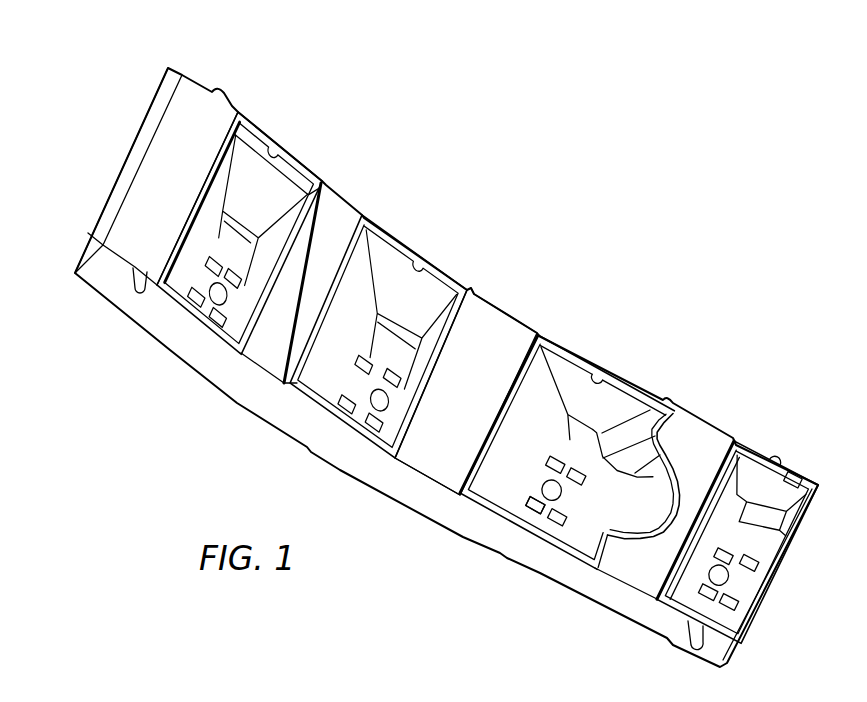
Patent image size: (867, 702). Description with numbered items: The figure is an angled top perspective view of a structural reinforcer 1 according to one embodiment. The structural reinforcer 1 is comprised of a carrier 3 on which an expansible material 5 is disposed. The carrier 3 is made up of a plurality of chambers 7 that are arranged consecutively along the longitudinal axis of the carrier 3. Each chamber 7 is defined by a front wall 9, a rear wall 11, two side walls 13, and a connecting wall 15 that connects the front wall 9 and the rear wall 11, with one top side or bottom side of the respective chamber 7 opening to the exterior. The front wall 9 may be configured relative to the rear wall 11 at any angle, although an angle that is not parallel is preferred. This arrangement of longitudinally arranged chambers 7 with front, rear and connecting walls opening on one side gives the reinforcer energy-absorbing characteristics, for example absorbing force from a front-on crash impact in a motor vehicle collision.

The structural reinforcer 1 is at (218, 38).
The carrier 3 is at (89, 188).
The expansible material 5 is at (488, 337).
The chamber 7 is at (583, 457).
The front wall 9 is at (500, 472).
The rear wall 11 is at (665, 497).
The side walls 13 is at (577, 387).
The connecting wall 15 is at (594, 428).